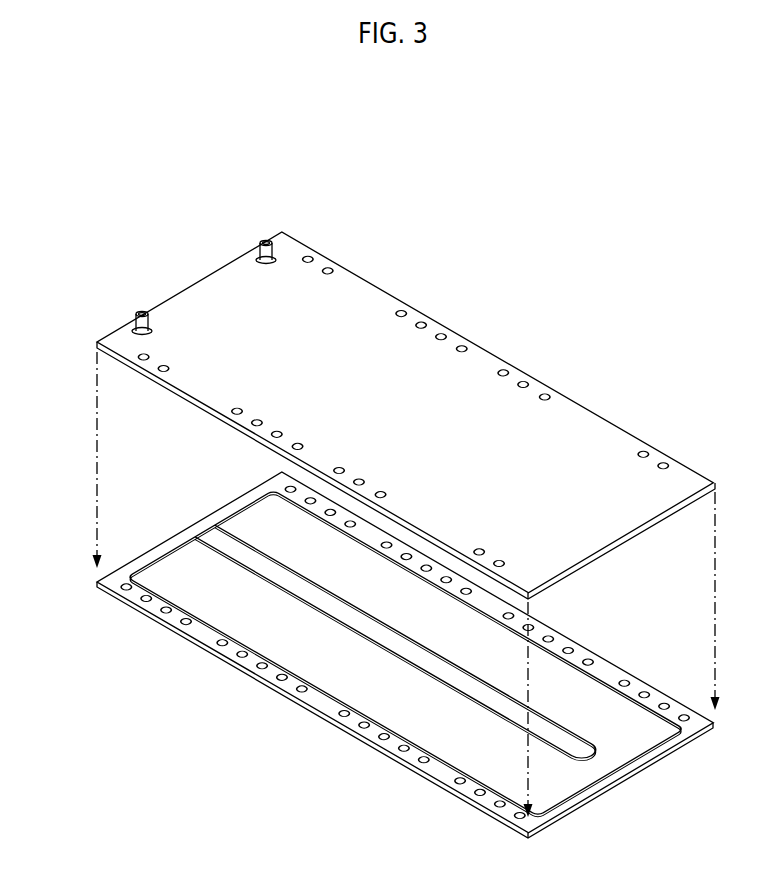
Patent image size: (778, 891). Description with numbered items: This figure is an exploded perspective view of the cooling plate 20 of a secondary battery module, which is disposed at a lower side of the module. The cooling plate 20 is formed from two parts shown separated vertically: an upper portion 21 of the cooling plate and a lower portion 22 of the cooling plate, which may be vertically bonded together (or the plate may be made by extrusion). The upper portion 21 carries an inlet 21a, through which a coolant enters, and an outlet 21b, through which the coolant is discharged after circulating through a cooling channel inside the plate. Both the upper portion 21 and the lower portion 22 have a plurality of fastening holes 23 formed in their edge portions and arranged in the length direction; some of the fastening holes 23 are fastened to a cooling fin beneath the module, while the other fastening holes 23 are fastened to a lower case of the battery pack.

The cooling plate 20 is at (148, 136).
The upper portion of the cooling plate 21 is at (587, 437).
The inlet 21a is at (134, 315).
The outlet 21b is at (259, 243).
The lower portion of the cooling plate 22 is at (618, 786).
The fastening holes 23 is at (337, 267).